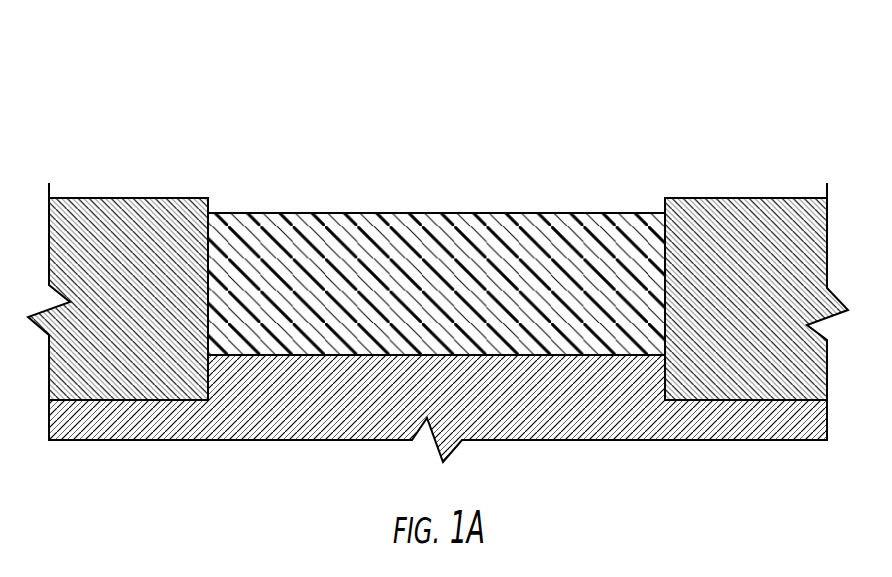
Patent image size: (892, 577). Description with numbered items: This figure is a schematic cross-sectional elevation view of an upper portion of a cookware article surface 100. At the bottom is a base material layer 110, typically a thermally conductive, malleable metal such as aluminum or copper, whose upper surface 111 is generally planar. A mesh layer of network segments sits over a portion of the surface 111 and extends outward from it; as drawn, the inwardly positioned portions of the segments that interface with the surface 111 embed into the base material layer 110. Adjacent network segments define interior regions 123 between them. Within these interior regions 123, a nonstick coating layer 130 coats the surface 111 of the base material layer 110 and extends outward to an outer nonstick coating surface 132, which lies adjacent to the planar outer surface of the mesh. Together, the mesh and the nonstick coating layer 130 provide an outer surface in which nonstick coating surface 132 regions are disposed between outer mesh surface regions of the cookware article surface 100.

The cookware article surface 100 is at (147, 89).
The base material layer 110 is at (451, 405).
The surface of the base material layer 111 is at (588, 352).
The interior regions 123 is at (496, 170).
The nonstick coating layer 130 is at (452, 300).
The outer nonstick coating surface 132 is at (305, 213).